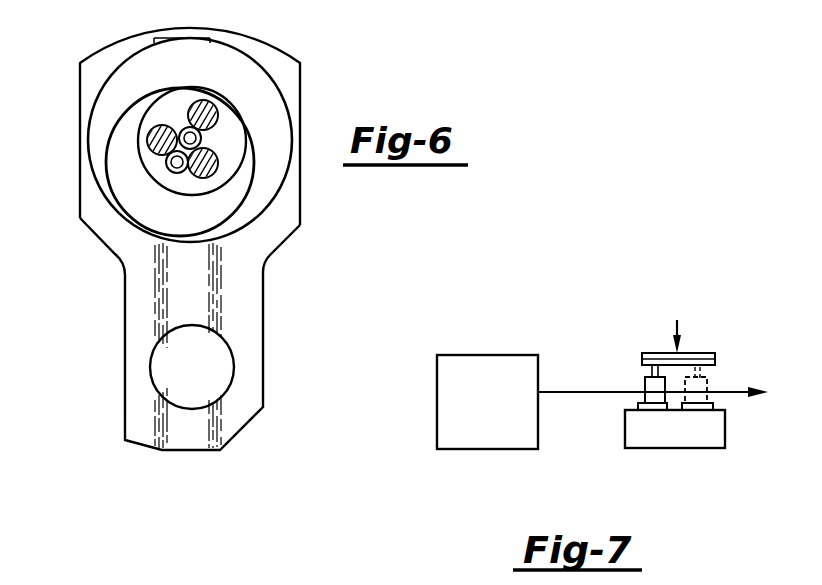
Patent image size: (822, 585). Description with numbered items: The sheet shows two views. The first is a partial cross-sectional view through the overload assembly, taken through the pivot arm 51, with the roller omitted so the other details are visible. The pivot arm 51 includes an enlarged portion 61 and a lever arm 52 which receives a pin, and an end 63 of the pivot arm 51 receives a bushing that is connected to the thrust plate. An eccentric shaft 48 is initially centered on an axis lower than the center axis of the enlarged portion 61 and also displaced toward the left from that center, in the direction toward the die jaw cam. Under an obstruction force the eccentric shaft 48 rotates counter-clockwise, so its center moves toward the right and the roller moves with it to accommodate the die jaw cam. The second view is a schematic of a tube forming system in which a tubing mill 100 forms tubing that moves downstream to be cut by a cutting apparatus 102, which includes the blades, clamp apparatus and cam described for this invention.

In FIG. 6, the pivot arm 51 is at (87, 80).
In FIG. 6, the enlarged portion 61 is at (102, 132).
In FIG. 6, the end 63 is at (222, 123).
In FIG. 6, the eccentric shaft 48 is at (152, 208).
In FIG. 6, the lever arm 52 is at (138, 313).
In FIG. 7, the tubing mill 100 is at (495, 413).
In FIG. 7, the cutting apparatus 102 is at (688, 443).